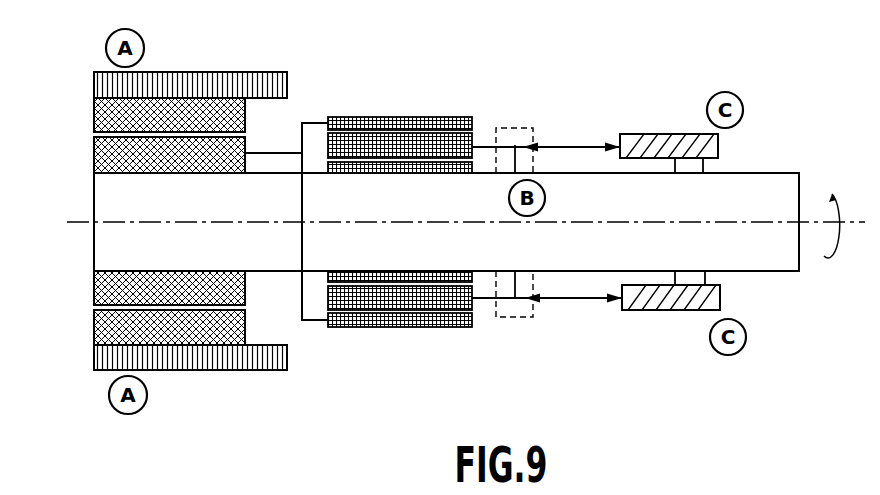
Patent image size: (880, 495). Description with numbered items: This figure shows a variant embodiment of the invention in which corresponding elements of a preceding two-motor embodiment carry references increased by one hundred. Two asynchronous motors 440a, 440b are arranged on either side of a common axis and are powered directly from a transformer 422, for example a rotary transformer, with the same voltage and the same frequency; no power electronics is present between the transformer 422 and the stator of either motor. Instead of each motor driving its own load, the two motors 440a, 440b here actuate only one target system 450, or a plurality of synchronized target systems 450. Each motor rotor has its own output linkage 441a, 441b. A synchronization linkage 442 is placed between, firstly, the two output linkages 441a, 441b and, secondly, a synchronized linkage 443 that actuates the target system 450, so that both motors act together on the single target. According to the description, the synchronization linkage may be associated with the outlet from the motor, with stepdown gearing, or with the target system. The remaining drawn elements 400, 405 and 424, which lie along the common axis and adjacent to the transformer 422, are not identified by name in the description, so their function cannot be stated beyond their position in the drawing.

The shaft 400 is at (778, 183).
The bearing 405 is at (177, 78).
The transformer 422 is at (82, 135).
The stepped section 424 is at (267, 152).
The asynchronous motor 440a is at (391, 113).
The asynchronous motor 440b is at (394, 332).
The output linkage 441a is at (485, 143).
The output linkage 441b is at (487, 301).
The synchronization linkage 442 is at (542, 126).
The synchronized linkage 443 is at (582, 144).
The target system 450 is at (667, 134).